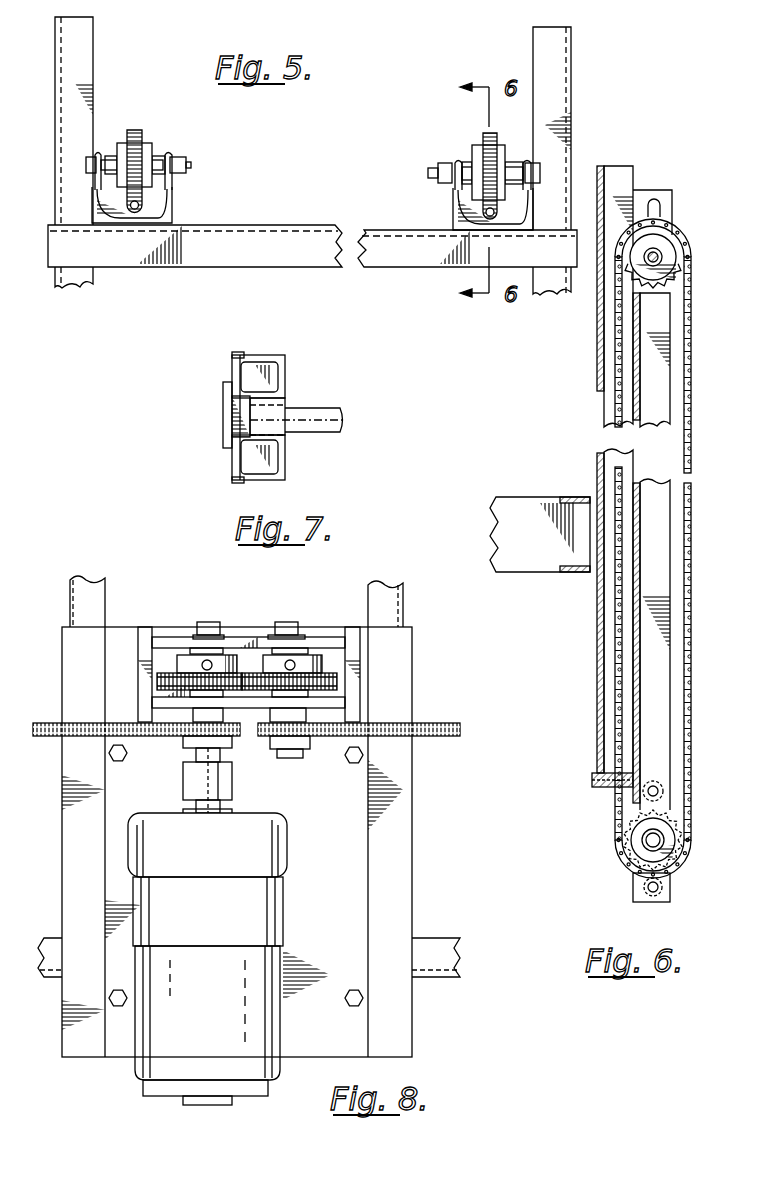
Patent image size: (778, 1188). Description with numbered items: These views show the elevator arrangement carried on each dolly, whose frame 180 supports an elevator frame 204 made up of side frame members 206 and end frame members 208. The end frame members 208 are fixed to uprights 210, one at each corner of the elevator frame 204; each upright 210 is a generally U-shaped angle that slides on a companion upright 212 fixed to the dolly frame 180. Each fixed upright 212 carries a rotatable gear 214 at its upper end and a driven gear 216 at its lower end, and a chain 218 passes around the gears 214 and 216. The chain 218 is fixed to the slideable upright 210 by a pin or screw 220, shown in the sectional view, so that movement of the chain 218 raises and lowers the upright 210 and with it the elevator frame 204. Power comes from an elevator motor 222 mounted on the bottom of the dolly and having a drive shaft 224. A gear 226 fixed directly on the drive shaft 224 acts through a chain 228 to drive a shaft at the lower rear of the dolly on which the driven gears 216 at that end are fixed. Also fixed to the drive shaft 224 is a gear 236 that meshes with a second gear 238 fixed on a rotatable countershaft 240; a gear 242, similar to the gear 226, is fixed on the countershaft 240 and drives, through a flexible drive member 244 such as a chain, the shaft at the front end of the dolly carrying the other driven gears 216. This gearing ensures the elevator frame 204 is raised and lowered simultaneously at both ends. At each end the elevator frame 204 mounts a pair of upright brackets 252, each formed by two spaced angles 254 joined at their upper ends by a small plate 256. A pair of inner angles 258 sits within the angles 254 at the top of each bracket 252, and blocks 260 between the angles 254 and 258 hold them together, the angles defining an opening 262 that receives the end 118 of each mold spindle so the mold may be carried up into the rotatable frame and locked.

In FIG. 7, the end of the stem or spindle 118 is at (285, 440).
In FIG. 5, the dolly frame 180 is at (578, 82).
In FIG. 5, the elevator frame 204 is at (198, 270).
In FIG. 6, the elevator frame 204 is at (540, 578).
In FIG. 6, the side frame members 206 is at (493, 540).
In FIG. 5, the end frame members 208 is at (423, 266).
In FIG. 6, the end frame members 208 is at (576, 495).
In FIG. 5, the uprights 210 is at (172, 208).
In FIG. 6, the uprights 210 is at (597, 325).
In FIG. 5, the uprights 212 is at (173, 185).
In FIG. 6, the uprights 212 is at (665, 210).
In FIG. 5, the rotatable gear 214 is at (152, 148).
In FIG. 6, the rotatable gear 214 is at (668, 288).
In FIG. 6, the driven gear 216 is at (628, 853).
In FIG. 5, the chain 218 is at (140, 133).
In FIG. 6, the chain 218 is at (693, 386).
In FIG. 6, the pin or screw 220 is at (612, 786).
In FIG. 8, the elevator motor 222 is at (285, 845).
In FIG. 8, the drive shaft 224 is at (222, 802).
In FIG. 8, the gear 226 is at (185, 747).
In FIG. 8, the chain 228 is at (50, 723).
In FIG. 8, the gear 236 is at (163, 673).
In FIG. 8, the second gear 238 is at (327, 677).
In FIG. 8, the countershaft 240 is at (297, 611).
In FIG. 8, the gear 242 is at (299, 759).
In FIG. 8, the flexible drive member 244 is at (430, 726).
In FIG. 7, the upright brackets 252 is at (217, 392).
In FIG. 7, the angles 254 is at (237, 355).
In FIG. 7, the small plate 256 is at (222, 428).
In FIG. 7, the inner angles 258 is at (287, 370).
In FIG. 7, the blocks 260 is at (268, 380).
In FIG. 7, the opening 262 is at (293, 410).